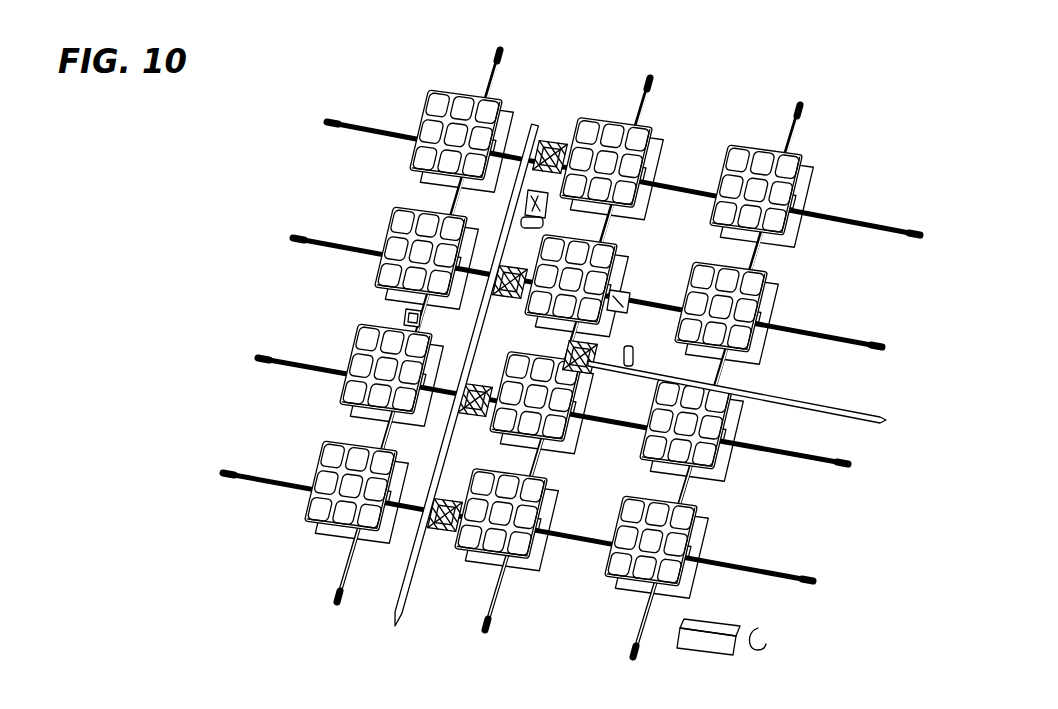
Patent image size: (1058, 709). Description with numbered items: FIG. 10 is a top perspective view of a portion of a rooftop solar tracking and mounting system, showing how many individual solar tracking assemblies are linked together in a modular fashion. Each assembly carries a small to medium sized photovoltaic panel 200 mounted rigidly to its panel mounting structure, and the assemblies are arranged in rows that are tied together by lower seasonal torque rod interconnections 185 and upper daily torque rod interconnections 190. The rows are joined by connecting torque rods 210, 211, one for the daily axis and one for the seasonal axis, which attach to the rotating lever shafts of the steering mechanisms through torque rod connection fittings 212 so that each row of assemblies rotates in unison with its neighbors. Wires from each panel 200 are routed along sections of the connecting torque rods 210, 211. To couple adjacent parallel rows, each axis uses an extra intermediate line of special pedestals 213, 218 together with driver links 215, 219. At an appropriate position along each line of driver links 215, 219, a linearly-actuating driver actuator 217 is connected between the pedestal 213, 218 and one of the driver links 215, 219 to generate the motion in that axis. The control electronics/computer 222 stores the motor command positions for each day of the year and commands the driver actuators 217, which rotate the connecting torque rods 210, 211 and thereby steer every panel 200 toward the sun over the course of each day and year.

The upper daily torque rod interconnection 190 is at (476, 58).
The lower seasonal torque rod interconnection 185 is at (316, 268).
The photovoltaic panel 200 is at (678, 522).
The connecting torque rod 210 is at (274, 482).
The connecting torque rod 211 is at (440, 190).
The torque rod connection fitting 212 is at (303, 236).
The special pedestal 213 is at (405, 318).
The driver link 215 is at (808, 402).
The driver actuator 217 is at (548, 212).
The special pedestal 218 is at (549, 138).
The driver link 219 is at (397, 607).
The control electronics/computer 222 is at (722, 630).